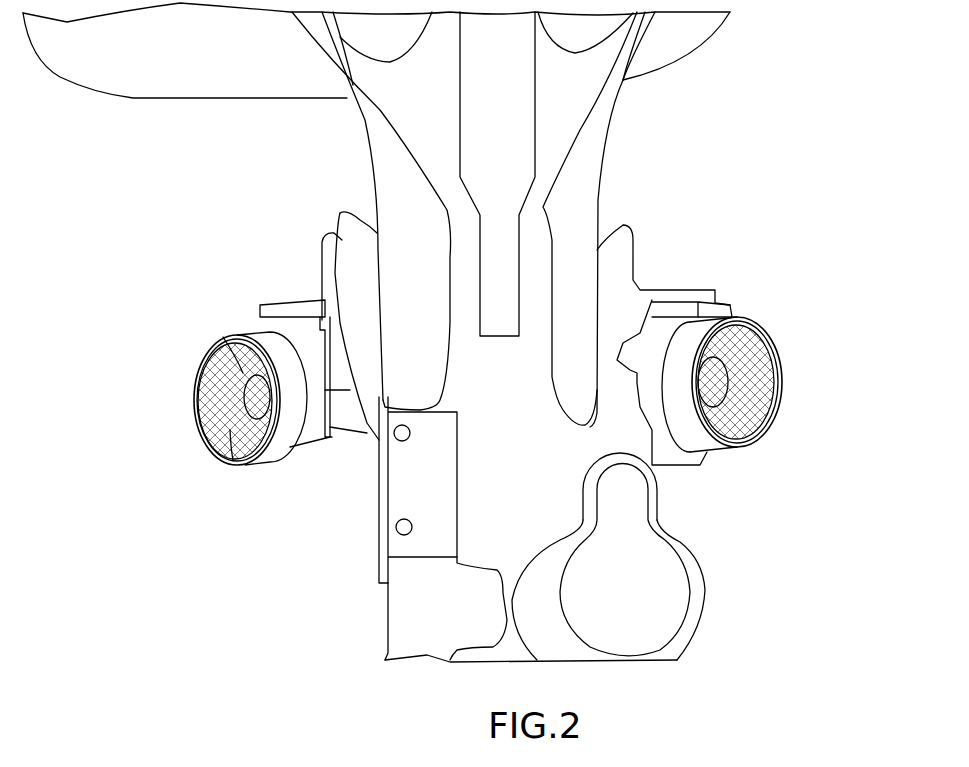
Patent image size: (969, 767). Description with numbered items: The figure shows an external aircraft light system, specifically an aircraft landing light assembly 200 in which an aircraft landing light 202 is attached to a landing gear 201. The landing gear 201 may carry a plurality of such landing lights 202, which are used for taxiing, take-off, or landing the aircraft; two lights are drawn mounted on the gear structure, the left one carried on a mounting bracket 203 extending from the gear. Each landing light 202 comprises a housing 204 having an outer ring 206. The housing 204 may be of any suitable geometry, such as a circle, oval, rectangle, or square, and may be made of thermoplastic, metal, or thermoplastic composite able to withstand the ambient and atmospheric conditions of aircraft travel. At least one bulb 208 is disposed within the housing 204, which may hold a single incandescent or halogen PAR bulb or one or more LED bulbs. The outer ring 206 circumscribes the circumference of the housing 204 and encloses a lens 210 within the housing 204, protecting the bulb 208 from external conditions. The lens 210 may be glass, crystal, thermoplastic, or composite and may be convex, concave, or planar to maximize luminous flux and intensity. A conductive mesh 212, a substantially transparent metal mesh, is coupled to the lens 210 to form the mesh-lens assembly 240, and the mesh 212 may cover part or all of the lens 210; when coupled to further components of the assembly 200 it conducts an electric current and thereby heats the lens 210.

The aircraft landing light assembly 200 is at (122, 608).
The landing gear 201 is at (600, 192).
The landing light 202 is at (453, 388).
The mounting bracket 203 is at (297, 303).
The housing 204 is at (260, 327).
The outer ring 206 is at (210, 350).
The bulb 208 is at (223, 337).
The lens 210 is at (197, 418).
The conductive mesh 212 is at (233, 460).
The mesh-lens assembly 240 is at (410, 388).